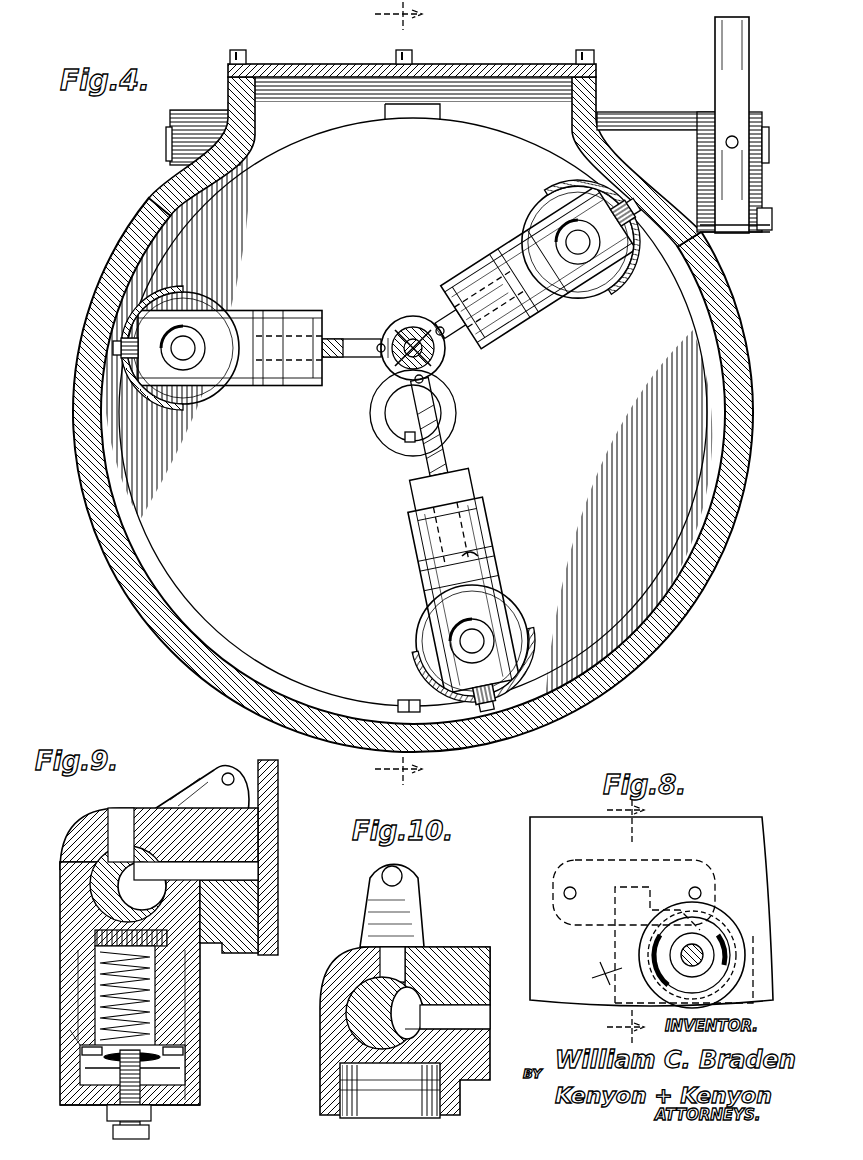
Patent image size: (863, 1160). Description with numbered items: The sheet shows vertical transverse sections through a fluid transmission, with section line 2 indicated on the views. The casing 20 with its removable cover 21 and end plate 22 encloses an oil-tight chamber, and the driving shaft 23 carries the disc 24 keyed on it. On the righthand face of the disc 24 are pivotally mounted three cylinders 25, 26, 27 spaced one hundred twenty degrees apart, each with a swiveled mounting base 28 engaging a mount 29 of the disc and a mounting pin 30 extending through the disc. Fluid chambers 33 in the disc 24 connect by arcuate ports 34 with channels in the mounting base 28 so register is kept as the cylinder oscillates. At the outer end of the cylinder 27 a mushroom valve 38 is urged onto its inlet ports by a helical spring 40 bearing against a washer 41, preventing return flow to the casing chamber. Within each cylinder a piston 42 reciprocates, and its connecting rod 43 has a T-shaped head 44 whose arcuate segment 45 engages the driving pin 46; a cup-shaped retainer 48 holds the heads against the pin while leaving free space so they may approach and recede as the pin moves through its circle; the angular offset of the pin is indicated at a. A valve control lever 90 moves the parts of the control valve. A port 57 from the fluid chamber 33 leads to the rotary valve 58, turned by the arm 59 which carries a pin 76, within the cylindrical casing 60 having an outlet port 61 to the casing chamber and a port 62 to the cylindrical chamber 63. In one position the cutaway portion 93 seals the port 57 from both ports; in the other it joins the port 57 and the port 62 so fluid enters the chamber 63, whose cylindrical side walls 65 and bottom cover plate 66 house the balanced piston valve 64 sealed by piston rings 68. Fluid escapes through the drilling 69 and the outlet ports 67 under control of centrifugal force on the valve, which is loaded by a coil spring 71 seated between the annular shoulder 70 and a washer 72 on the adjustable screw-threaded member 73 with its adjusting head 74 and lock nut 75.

In FIG. 4, the section line 2- 2 is at (398, 395).
In FIG. 8, the section line 2- 2 is at (626, 924).
In FIG. 4, the casing 20 is at (128, 266).
In FIG. 4, the removable cover 21 is at (499, 64).
In FIG. 4, the end plate 22 is at (702, 306).
In FIG. 4, the driving shaft 23 is at (396, 428).
In FIG. 4, the disc 24 is at (700, 364).
In FIG. 9, the disc 24 is at (279, 776).
In FIG. 10, the disc 24 is at (480, 950).
In FIG. 8, the disc 24 is at (755, 828).
In FIG. 4, the cylinder 25 is at (283, 316).
In FIG. 4, the cylinder 26 is at (522, 258).
In FIG. 4, the cylinder 27 is at (496, 536).
In FIG. 4, the swiveled mounting base 28 is at (200, 308).
In FIG. 8, the mount 29 is at (720, 985).
In FIG. 4, the mounting pin 30 is at (183, 365).
In FIG. 8, the mounting pin 30 is at (702, 950).
In FIG. 9, the fluid chamber 33 is at (262, 905).
In FIG. 8, the fluid chamber 33 is at (615, 952).
In FIG. 4, the port 34 is at (232, 310).
In FIG. 8, the port 34 is at (708, 930).
In FIG. 4, the mushroom valve 38 is at (140, 382).
In FIG. 4, the helical spring 40 is at (130, 353).
In FIG. 4, the washer 41 is at (125, 345).
In FIG. 4, the piston 42 is at (290, 340).
In FIG. 4, the connecting rod 43 is at (347, 340).
In FIG. 4, the T-shaped head 44 is at (383, 385).
In FIG. 4, the arcuate segment 45 is at (386, 362).
In FIG. 4, the driving pin 46 is at (396, 335).
In FIG. 4, the cup-shaped retainer 48 is at (408, 318).
In FIG. 9, the port 57 is at (170, 862).
In FIG. 10, the port 57 is at (443, 1010).
In FIG. 9, the rotary valve 58 is at (90, 865).
In FIG. 10, the rotary valve 58 is at (345, 990).
In FIG. 9, the arm 59 is at (195, 785).
In FIG. 10, the arm 59 is at (410, 900).
In FIG. 9, the cylindrical casing 60 is at (68, 897).
In FIG. 10, the cylindrical casing 60 is at (322, 1015).
In FIG. 9, the outlet port 61 is at (112, 826).
In FIG. 10, the outlet port 61 is at (385, 962).
In FIG. 9, the port 62 is at (110, 915).
In FIG. 10, the port 62 is at (380, 1045).
In FIG. 9, the cylindrical chamber 63 is at (95, 938).
In FIG. 9, the balanced piston valve 64 is at (78, 1007).
In FIG. 10, the balanced piston valve 64 is at (342, 1093).
In FIG. 9, the cylindrical side walls 65 is at (80, 1030).
In FIG. 10, the cylindrical side walls 65 is at (325, 1113).
In FIG. 9, the bottom cover plate 66 is at (80, 1106).
In FIG. 9, the outlet ports 67 is at (185, 1050).
In FIG. 9, the piston rings 68 is at (200, 1005).
In FIG. 9, the drilling 69 is at (82, 1070).
In FIG. 9, the annular shoulder 70 is at (97, 960).
In FIG. 9, the coil spring 71 is at (186, 1056).
In FIG. 9, the washer 72 is at (186, 1072).
In FIG. 9, the adjustable screw-threaded member 73 is at (140, 1095).
In FIG. 4, the adjusting head 74 is at (404, 701).
In FIG. 9, the adjusting head 74 is at (147, 1133).
In FIG. 9, the lock nut 75 is at (112, 1113).
In FIG. 9, the pin 76 is at (228, 770).
In FIG. 10, the pin 76 is at (405, 872).
In FIG. 4, the valve control lever 90 is at (750, 76).
In FIG. 9, the cutaway portion 93 is at (100, 856).
In FIG. 10, the cutaway portion 93 is at (412, 1030).
In FIG. 4, the angular offset a is at (470, 569).